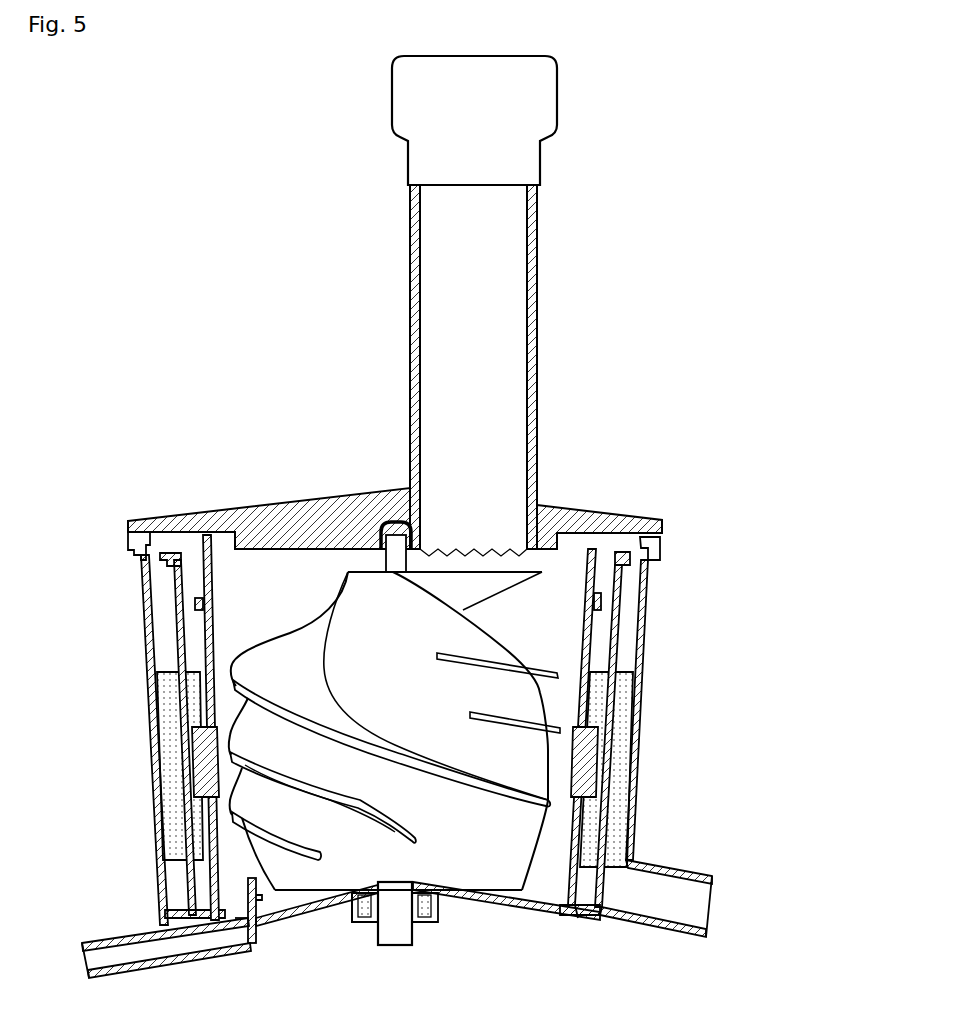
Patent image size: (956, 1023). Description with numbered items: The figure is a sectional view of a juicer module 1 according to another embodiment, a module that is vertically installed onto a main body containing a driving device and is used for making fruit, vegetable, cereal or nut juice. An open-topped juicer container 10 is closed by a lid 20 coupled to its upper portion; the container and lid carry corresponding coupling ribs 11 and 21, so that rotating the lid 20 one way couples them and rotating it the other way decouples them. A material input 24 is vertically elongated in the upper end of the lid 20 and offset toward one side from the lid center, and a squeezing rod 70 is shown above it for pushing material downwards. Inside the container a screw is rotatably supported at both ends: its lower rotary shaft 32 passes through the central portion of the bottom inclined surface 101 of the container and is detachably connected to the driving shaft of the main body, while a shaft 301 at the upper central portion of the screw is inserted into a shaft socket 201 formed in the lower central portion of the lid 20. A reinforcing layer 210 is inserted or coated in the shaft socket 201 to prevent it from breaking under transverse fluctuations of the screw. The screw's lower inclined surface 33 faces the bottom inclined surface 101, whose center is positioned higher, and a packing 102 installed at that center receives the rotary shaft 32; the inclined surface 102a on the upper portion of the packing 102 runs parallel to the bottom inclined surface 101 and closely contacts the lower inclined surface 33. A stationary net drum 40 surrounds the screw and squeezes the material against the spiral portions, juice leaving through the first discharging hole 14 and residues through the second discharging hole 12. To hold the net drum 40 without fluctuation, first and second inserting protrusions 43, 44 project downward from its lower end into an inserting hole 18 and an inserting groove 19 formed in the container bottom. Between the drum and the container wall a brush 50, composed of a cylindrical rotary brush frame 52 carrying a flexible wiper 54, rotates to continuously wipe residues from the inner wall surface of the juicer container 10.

The juicer module 1 is at (694, 188).
The squeezing rod 70 is at (552, 105).
The material input 24 is at (537, 315).
The lid 20 is at (409, 486).
The coupling rib 21 is at (150, 530).
The shaft socket 201 is at (402, 560).
The reinforcing layer 210 is at (384, 522).
The shaft 301 is at (382, 562).
The juicer container 10 is at (390, 769).
The coupling rib 11 is at (130, 546).
The second discharging hole 12 is at (697, 903).
The first discharging hole 14 is at (100, 963).
The inserting hole 18 is at (258, 922).
The first inserting protrusion 43 is at (234, 920).
The brush 50 is at (356, 737).
The wiper 54 is at (170, 785).
The brush frame 52 is at (185, 902).
The net drum 40 is at (365, 767).
The second inserting protrusion 44 is at (572, 918).
The inserting groove 19 is at (578, 918).
The lower inclined surface 33 is at (308, 910).
The bottom inclined surface 101 is at (540, 912).
The packing 102 is at (436, 915).
The inclined surface 102a is at (364, 912).
The rotary shaft 32 is at (408, 935).